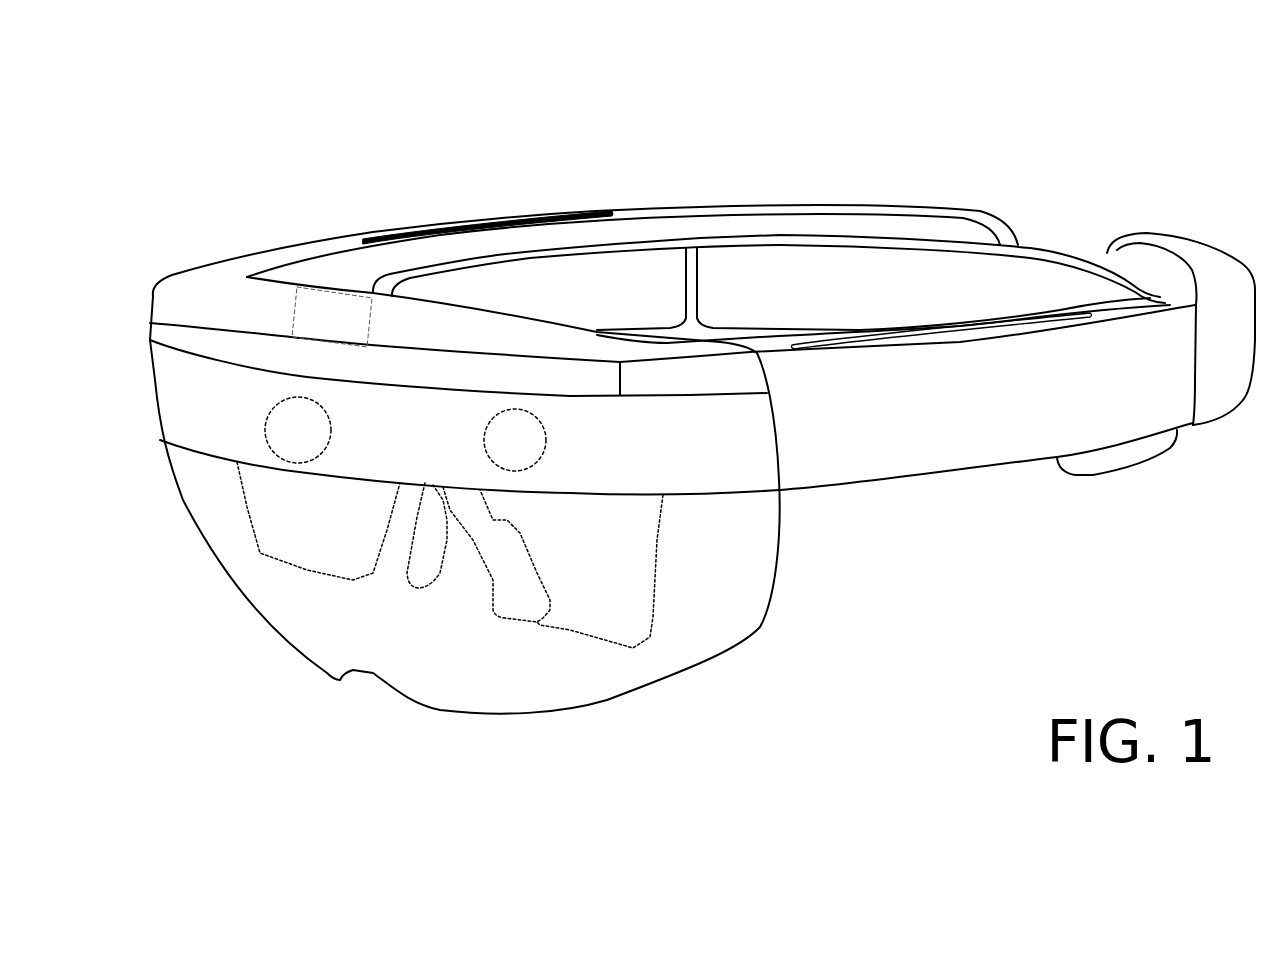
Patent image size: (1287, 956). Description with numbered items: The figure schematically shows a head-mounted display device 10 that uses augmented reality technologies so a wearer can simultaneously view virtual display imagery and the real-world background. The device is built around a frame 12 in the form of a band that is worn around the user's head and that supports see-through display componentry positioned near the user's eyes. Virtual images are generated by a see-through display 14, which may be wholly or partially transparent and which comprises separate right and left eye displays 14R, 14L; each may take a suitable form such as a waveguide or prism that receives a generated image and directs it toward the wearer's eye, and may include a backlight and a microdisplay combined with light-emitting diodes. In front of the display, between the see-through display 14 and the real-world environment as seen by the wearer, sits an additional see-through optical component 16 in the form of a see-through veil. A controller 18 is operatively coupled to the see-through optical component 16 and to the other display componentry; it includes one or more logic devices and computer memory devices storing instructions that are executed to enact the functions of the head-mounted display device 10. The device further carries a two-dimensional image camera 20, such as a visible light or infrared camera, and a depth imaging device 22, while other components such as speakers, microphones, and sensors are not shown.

The head-mounted display device 10 is at (702, 408).
The frame 12 is at (1031, 413).
The see-through display 14 is at (485, 555).
The right eye display 14R is at (362, 561).
The left eye display 14L is at (587, 631).
The see-through optical component 16 is at (770, 617).
The controller 18 is at (318, 330).
The two-dimensional image camera 20 is at (501, 454).
The depth imaging device 22 is at (284, 444).